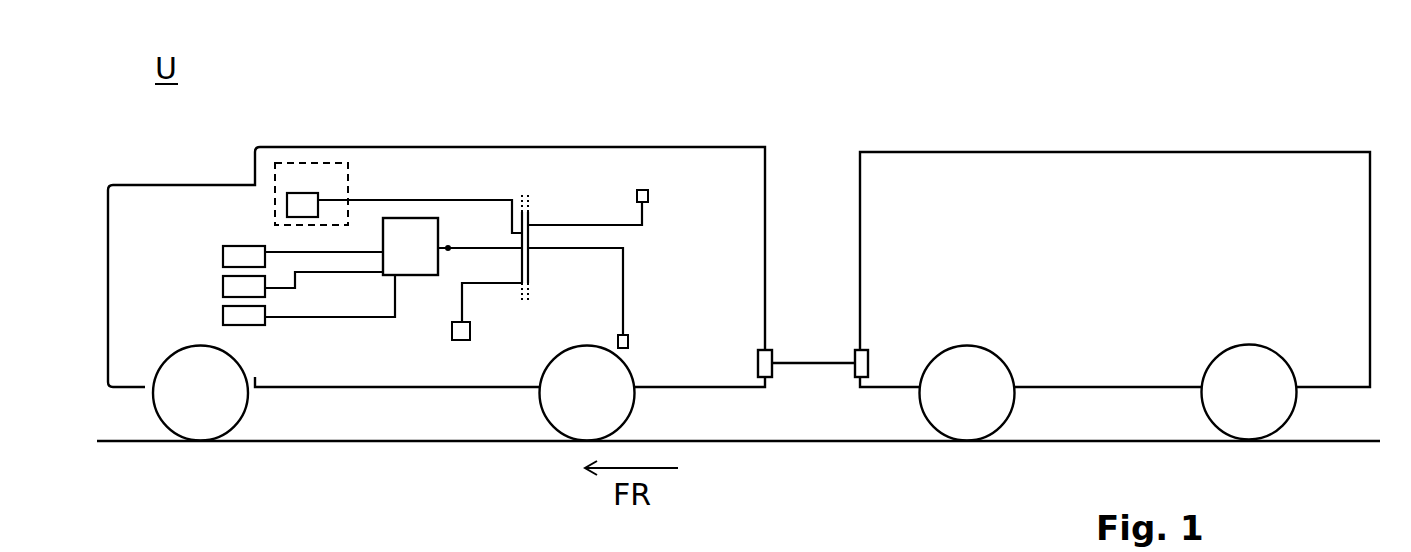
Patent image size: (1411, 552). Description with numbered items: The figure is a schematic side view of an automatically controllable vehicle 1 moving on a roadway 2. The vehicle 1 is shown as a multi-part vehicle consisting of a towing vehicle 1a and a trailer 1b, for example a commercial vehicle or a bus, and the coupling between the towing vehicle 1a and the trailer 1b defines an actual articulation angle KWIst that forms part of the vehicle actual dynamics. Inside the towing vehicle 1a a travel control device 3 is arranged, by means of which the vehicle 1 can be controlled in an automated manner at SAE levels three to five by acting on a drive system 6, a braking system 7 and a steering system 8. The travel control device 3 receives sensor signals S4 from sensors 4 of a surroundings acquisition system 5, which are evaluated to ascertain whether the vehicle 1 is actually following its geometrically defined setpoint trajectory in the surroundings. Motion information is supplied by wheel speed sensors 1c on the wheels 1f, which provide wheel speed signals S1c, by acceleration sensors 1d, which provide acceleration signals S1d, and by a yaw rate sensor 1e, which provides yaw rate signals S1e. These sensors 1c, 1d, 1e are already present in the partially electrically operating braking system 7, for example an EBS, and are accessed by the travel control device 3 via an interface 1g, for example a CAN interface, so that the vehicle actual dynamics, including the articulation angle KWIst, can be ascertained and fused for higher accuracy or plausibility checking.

The vehicle 1 is at (490, 276).
The towing vehicle 1a is at (697, 147).
The trailer 1b is at (1223, 151).
The wheel speed sensors 1c is at (630, 338).
The acceleration sensors 1d is at (648, 192).
The yaw rate sensor 1e is at (450, 333).
The wheels 1f is at (572, 417).
The interface 1g is at (530, 217).
The roadway 2 is at (1284, 441).
The travel control device 3 is at (421, 264).
The sensors 4 is at (298, 202).
The surroundings acquisition system 5 is at (335, 155).
The drive system 6 is at (233, 253).
The braking system 7 is at (235, 287).
The steering system 8 is at (228, 313).
The sensor signals S4 is at (420, 197).
The wheel speed signals S1c is at (625, 265).
The acceleration signals S1d is at (645, 218).
The yaw rate signals S1e is at (465, 295).
The actual articulation angle KWIst is at (805, 388).